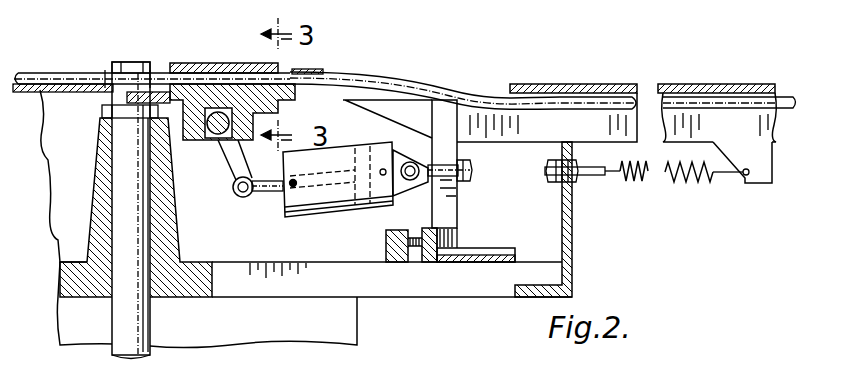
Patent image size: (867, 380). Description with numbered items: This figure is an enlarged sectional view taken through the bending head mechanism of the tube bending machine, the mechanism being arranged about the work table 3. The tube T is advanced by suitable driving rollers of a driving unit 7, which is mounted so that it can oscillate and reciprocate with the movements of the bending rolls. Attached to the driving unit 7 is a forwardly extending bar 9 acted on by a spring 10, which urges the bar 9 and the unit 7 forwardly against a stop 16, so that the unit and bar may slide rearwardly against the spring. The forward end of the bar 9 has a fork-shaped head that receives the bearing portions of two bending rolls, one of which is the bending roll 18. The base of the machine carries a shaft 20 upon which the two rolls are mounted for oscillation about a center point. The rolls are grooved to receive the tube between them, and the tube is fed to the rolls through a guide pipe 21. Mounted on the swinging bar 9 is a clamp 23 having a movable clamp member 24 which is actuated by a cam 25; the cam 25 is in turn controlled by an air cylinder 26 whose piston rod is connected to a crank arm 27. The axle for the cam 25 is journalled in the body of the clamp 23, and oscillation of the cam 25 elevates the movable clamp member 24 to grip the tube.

The work table 3 is at (572, 84).
The driving unit 7 is at (785, 100).
The bar 9 is at (765, 188).
The spring 10 is at (621, 180).
The stop 16 is at (428, 240).
The bending roll 18 is at (112, 70).
The shaft 20 is at (150, 316).
The guide pipe 21 is at (372, 73).
The clamp 23 is at (220, 63).
The movable clamp member 24 is at (190, 140).
The cam 25 is at (226, 130).
The air cylinder 26 is at (325, 217).
The crank arm 27 is at (224, 184).